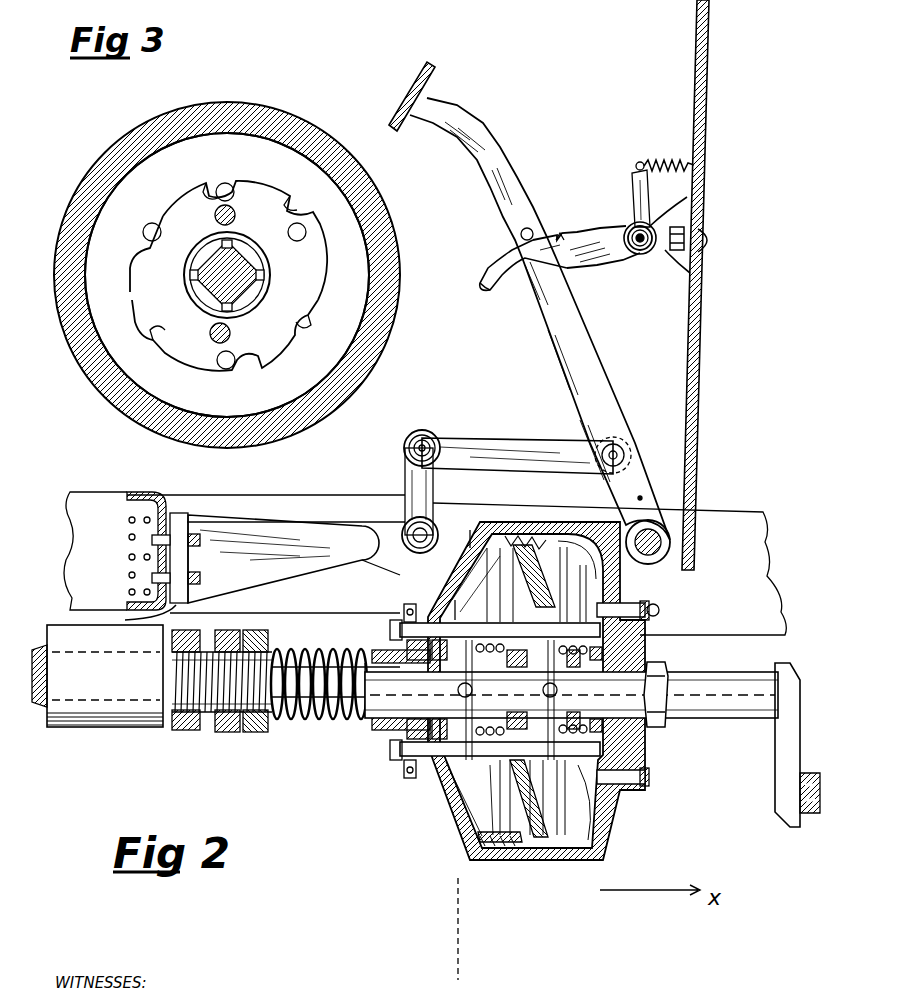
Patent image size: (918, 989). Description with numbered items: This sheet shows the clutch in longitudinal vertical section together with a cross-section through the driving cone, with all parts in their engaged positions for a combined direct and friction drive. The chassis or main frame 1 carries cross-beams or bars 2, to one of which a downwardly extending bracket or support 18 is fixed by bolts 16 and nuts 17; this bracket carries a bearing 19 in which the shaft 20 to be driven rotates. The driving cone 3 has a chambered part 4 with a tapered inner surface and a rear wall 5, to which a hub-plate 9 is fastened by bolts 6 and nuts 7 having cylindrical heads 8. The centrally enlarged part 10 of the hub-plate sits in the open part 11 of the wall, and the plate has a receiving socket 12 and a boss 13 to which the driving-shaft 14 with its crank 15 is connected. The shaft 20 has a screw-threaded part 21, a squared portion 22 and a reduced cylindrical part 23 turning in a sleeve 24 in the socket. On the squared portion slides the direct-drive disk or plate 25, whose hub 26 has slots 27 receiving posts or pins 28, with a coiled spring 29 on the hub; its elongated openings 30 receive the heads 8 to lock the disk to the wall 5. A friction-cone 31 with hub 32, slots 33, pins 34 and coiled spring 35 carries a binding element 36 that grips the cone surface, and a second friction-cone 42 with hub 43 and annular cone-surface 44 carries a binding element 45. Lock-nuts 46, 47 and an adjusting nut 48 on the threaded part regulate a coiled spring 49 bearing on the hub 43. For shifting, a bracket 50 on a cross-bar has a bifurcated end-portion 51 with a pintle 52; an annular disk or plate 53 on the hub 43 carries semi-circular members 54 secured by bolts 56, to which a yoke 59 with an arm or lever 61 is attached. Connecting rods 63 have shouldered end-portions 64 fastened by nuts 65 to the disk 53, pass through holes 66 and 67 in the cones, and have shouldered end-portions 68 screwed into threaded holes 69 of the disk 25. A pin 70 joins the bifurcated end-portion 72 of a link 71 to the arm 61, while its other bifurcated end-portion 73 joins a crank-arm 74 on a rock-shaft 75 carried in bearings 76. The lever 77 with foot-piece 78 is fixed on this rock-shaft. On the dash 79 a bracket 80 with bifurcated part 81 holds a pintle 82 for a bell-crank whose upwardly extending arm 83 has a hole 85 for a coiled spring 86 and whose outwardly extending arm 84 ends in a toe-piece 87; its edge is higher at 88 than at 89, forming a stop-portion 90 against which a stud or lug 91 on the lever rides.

In FIG. 2, the chassis or main frame 1 is at (100, 495).
In FIG. 2, the cross-beams or bars 2 is at (160, 500).
In FIG. 3, the driving cone 3 is at (254, 104).
In FIG. 2, the driving cone 3 is at (580, 522).
In FIG. 2, the chambered part 4 is at (606, 852).
In FIG. 3, the rear wall 5 is at (297, 168).
In FIG. 2, the rear wall 5 is at (620, 602).
In FIG. 2, the bolts 6 is at (660, 762).
In FIG. 2, the nuts 7 is at (660, 792).
In FIG. 3, the cylindrical heads 8 is at (228, 185).
In FIG. 2, the cylindrical heads 8 is at (600, 608).
In FIG. 2, the hub-plate 9 is at (640, 652).
In FIG. 2, the centrally enlarged part 10 is at (668, 668).
In FIG. 2, the centrally disposed open part 11 is at (657, 688).
In FIG. 2, the receiving socket 12 is at (642, 732).
In FIG. 2, the boss 13 is at (730, 674).
In FIG. 2, the driving-shaft 14 is at (776, 675).
In FIG. 2, the crank 15 is at (796, 790).
In FIG. 2, the bolts 16 is at (140, 567).
In FIG. 2, the nuts 17 is at (202, 578).
In FIG. 2, the bracket or support 18 is at (180, 515).
In FIG. 2, the bearing 19 is at (108, 720).
In FIG. 2, the shaft 20 is at (38, 708).
In FIG. 2, the screw-threaded part 21 is at (214, 712).
In FIG. 3, the squared portion 22 is at (208, 296).
In FIG. 2, the squared portion 22 is at (395, 728).
In FIG. 2, the reduced cylindrical part 23 is at (668, 696).
In FIG. 2, the sleeve 24 is at (662, 725).
In FIG. 3, the direct-drive disk or plate 25 is at (182, 211).
In FIG. 2, the direct-drive disk or plate 25 is at (645, 746).
In FIG. 3, the hub 26 is at (233, 248).
In FIG. 2, the hub 26 is at (556, 852).
In FIG. 3, the slots 27 is at (196, 272).
In FIG. 2, the slots 27 is at (536, 852).
In FIG. 2, the post or pin 28 is at (543, 688).
In FIG. 3, the coiled spring 29 is at (278, 281).
In FIG. 2, the coiled spring 29 is at (650, 660).
In FIG. 3, the openings or cutaway parts 30 is at (210, 185).
In FIG. 2, the openings or cutaway parts 30 is at (604, 598).
In FIG. 2, the friction-cone 31 is at (500, 790).
In FIG. 2, the hub 32 is at (470, 800).
In FIG. 2, the slots 33 is at (460, 772).
In FIG. 2, the pin or post 34 is at (458, 688).
In FIG. 2, the coiled spring 35 is at (470, 792).
In FIG. 2, the engaging or binding element 36 is at (542, 866).
In FIG. 2, the friction-cone 42 is at (470, 820).
In FIG. 2, the hub 43 is at (372, 708).
In FIG. 2, the annular cone-surface 44 is at (480, 836).
In FIG. 2, the engaging or binding element 45 is at (472, 852).
In FIG. 2, the lock-nut 46 is at (182, 728).
In FIG. 2, the lock-nut 47 is at (234, 732).
In FIG. 2, the adjusting nut 48 is at (258, 732).
In FIG. 2, the coiled spring 49 is at (308, 650).
In FIG. 2, the bracket 50 is at (268, 520).
In FIG. 2, the bifurcated end-portion 51 is at (410, 530).
In FIG. 2, the pintle 52 is at (415, 520).
In FIG. 2, the annular disk or plate 53 is at (398, 770).
In FIG. 2, the semi-circular members 54 is at (400, 600).
In FIG. 2, the bolts 56 is at (407, 601).
In FIG. 2, the yoke 59 is at (348, 576).
In FIG. 2, the arm or lever 61 is at (445, 484).
In FIG. 3, the connecting rods or stems 63 is at (216, 216).
In FIG. 2, the connecting rods or stems 63 is at (497, 560).
In FIG. 2, the shouldered end-portions 64 is at (400, 764).
In FIG. 2, the nuts 65 is at (352, 650).
In FIG. 2, the openings or holes 66 is at (540, 556).
In FIG. 2, the openings or holes 67 is at (458, 590).
In FIG. 2, the shouldered end-portions 68 is at (656, 610).
In FIG. 2, the screw-threaded holes 69 is at (616, 830).
In FIG. 2, the pin or bolt 70 is at (415, 448).
In FIG. 2, the link 71 is at (508, 441).
In FIG. 2, the bifurcated end-portion 72 is at (422, 432).
In FIG. 2, the bifurcated end-portion 73 is at (625, 443).
In FIG. 2, the crank-arm 74 is at (642, 472).
In FIG. 2, the rock-shaft 75 is at (672, 542).
In FIG. 2, the bearings 76 is at (660, 606).
In FIG. 2, the lever 77 is at (586, 355).
In FIG. 2, the foot-piece 78 is at (402, 98).
In FIG. 2, the dash 79 is at (688, 380).
In FIG. 2, the bracket 80 is at (702, 232).
In FIG. 2, the bifurcated part 81 is at (632, 226).
In FIG. 2, the pintle or pin 82 is at (642, 250).
In FIG. 2, the upwardly extending arm 83 is at (636, 182).
In FIG. 2, the outwardly extending arm 84 is at (606, 250).
In FIG. 2, the hole 85 is at (639, 160).
In FIG. 2, the coiled spring 86 is at (670, 162).
In FIG. 2, the toe-piece 87 is at (483, 290).
In FIG. 2, the higher marginal edge portion 88 is at (514, 250).
In FIG. 2, the lower marginal edge portion 89 is at (590, 242).
In FIG. 2, the stop-portion 90 is at (561, 238).
In FIG. 2, the stud or lug 91 is at (520, 234).